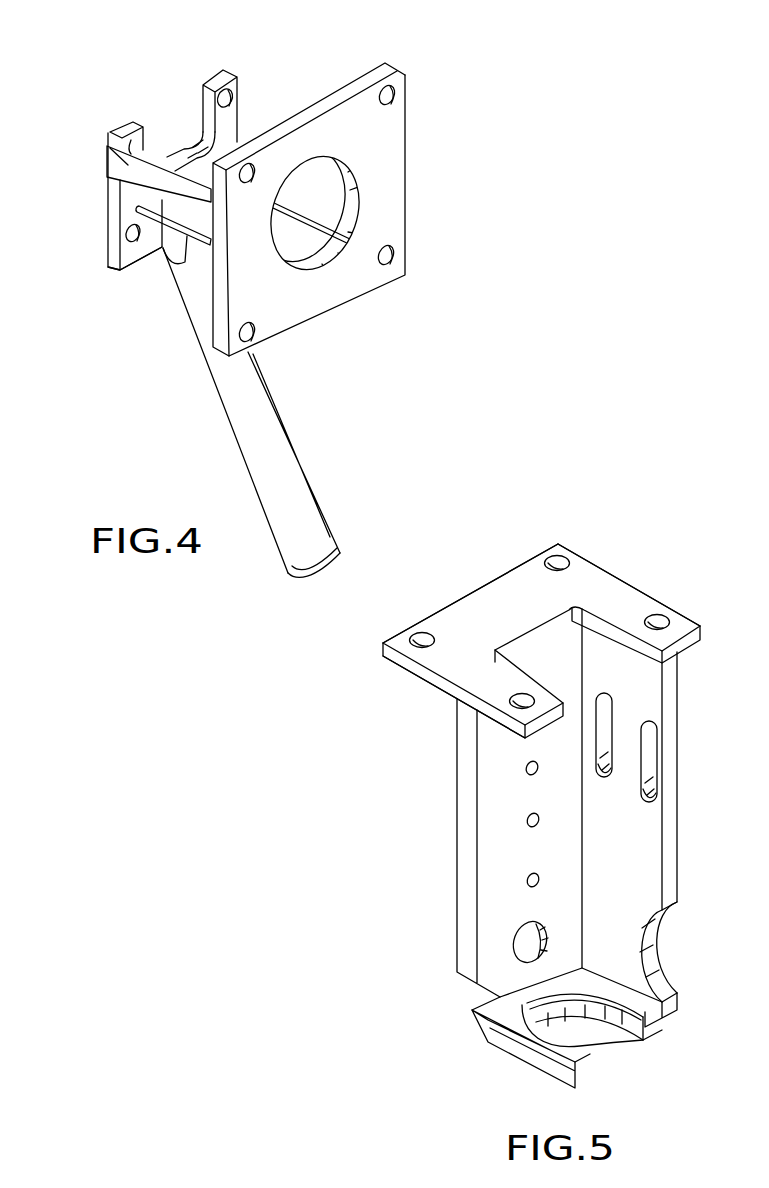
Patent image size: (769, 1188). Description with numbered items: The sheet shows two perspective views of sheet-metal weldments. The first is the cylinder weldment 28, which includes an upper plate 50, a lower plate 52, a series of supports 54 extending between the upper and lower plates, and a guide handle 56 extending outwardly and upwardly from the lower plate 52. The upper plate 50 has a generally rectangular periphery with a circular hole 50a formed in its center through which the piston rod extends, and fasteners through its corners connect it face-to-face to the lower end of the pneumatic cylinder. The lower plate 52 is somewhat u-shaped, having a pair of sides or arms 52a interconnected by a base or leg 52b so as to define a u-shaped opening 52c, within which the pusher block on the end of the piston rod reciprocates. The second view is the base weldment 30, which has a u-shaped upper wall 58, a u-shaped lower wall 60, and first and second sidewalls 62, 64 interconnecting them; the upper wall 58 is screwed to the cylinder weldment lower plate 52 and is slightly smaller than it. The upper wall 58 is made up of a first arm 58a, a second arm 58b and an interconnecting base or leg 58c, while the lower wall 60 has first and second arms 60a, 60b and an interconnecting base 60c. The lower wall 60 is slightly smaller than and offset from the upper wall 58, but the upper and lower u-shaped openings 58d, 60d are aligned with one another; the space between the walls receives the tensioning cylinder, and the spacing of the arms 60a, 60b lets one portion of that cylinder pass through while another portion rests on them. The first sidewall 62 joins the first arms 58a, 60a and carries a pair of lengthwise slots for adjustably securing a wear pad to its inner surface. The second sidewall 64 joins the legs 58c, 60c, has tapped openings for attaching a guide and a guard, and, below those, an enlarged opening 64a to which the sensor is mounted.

In FIG. 4, the cylinder weldment 28 is at (433, 135).
In FIG. 4, the upper plate 50 is at (398, 231).
In FIG. 4, the circular hole 50a is at (317, 263).
In FIG. 4, the lower plate 52 is at (106, 268).
In FIG. 4, the arms 52a is at (108, 214).
In FIG. 4, the base or leg 52b is at (145, 257).
In FIG. 4, the u-shaped opening 52c is at (167, 122).
In FIG. 4, the supports 54 is at (338, 196).
In FIG. 4, the guide handle 56 is at (309, 489).
In FIG. 5, the base weldment 30 is at (595, 543).
In FIG. 5, the u-shaped upper wall 58 is at (422, 670).
In FIG. 5, the first arm 58a is at (646, 594).
In FIG. 5, the second arm 58b is at (462, 690).
In FIG. 5, the interconnecting base or leg 58c is at (472, 593).
In FIG. 5, the upper u-shaped opening 58d is at (612, 670).
In FIG. 5, the u-shaped lower wall 60 is at (502, 1012).
In FIG. 5, the first arm 60a is at (664, 1030).
In FIG. 5, the second arm 60b is at (520, 1040).
In FIG. 5, the interconnecting base 60c is at (551, 1000).
In FIG. 5, the lower u-shaped opening 60d is at (598, 1052).
In FIG. 5, the first sidewall 62 is at (673, 861).
In FIG. 5, the second sidewall 64 is at (482, 831).
In FIG. 5, the enlarged opening 64a is at (516, 943).